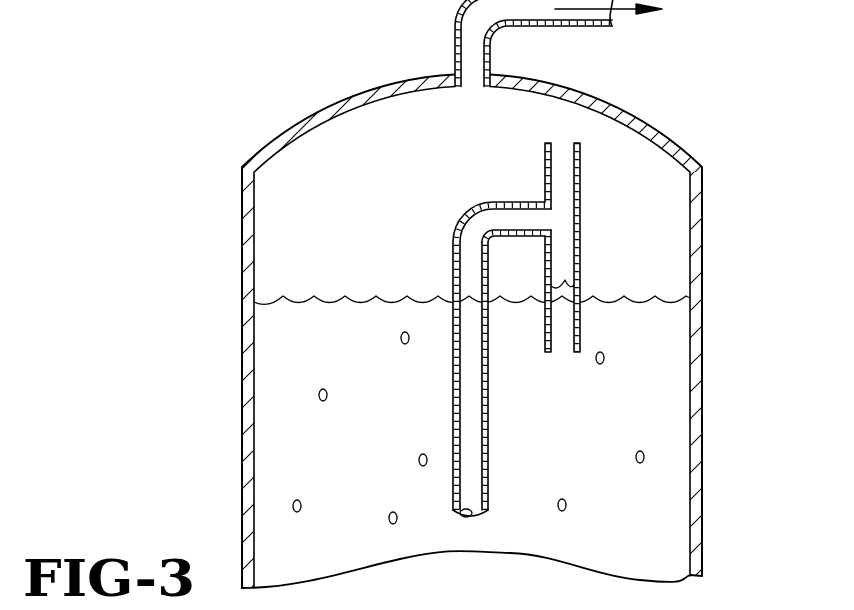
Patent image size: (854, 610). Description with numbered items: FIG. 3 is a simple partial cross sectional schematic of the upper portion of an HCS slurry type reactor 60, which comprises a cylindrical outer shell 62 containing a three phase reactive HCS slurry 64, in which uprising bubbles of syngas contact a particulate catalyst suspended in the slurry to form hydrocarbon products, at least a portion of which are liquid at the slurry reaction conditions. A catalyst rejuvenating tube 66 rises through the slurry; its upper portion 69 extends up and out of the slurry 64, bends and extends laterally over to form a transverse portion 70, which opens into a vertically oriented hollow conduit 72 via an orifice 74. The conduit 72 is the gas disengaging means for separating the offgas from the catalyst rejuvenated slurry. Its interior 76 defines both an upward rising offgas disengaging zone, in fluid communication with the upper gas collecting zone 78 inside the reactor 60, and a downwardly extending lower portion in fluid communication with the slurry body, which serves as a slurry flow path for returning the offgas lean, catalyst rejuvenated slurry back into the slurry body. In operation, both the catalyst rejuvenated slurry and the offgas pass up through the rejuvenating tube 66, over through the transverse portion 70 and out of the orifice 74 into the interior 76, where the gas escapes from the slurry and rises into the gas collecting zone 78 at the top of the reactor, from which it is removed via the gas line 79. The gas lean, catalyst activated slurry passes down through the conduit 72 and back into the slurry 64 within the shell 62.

The HCS slurry type reactor 60 is at (232, 126).
The cylindrical outer shell 62 is at (700, 423).
The three phase reactive HCS slurry 64 is at (297, 356).
The catalyst rejuvenating tube 66 is at (452, 420).
The upper portion of the tube 69 is at (453, 263).
The transverse portion 70 is at (500, 204).
The hollow conduit 72 is at (580, 173).
The orifice 74 is at (535, 223).
The interior of the conduit 76 is at (557, 219).
The gas collecting zone 78 is at (305, 196).
The gas line 79 is at (563, 27).